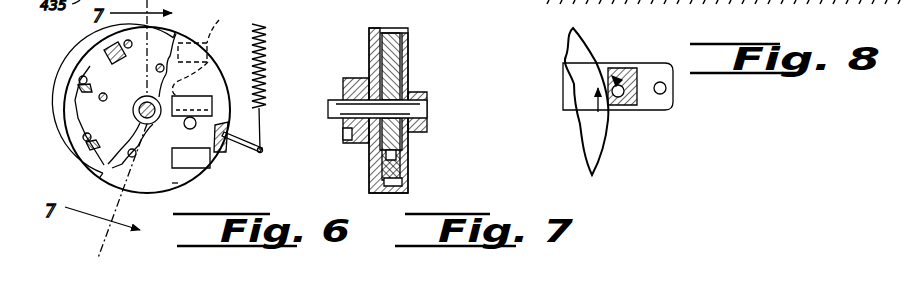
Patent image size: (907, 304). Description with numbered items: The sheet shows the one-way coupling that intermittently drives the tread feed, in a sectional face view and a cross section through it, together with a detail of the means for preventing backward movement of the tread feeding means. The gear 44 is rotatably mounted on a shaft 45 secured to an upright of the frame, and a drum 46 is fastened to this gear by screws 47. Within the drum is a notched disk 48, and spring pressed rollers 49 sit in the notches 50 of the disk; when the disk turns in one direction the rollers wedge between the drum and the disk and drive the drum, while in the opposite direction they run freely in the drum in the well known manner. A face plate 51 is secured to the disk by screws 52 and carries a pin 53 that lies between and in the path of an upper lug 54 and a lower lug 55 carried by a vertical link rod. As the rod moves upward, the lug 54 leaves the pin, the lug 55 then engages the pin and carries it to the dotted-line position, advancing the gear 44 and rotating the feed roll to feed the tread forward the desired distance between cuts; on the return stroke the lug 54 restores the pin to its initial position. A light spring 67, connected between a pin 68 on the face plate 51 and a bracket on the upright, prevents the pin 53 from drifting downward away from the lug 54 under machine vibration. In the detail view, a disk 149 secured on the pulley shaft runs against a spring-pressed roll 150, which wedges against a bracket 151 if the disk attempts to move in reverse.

In FIG. 7, the gear 44 is at (358, 78).
In FIG. 6, the shaft 45 is at (135, 114).
In FIG. 7, the shaft 45 is at (425, 108).
In FIG. 6, the drum 46 is at (66, 100).
In FIG. 7, the drum 46 is at (388, 30).
In FIG. 7, the screws 47 is at (345, 134).
In FIG. 6, the notched disk 48 is at (95, 70).
In FIG. 7, the notched disk 48 is at (400, 60).
In FIG. 6, the spring pressed rollers 49 is at (122, 40).
In FIG. 6, the notches 50 is at (75, 126).
In FIG. 6, the face plate 51 is at (172, 182).
In FIG. 7, the face plate 51 is at (404, 170).
In FIG. 7, the screws 52 is at (398, 156).
In FIG. 6, the pin 53 is at (208, 82).
In FIG. 6, the upper lug 54 is at (212, 100).
In FIG. 6, the lower lug 55 is at (224, 160).
In FIG. 6, the light spring 67 is at (276, 26).
In FIG. 6, the pin 68 is at (262, 155).
In FIG. 8, the disk 149 is at (598, 150).
In FIG. 8, the spring-pressed roll 150 is at (620, 98).
In FIG. 8, the bracket 151 is at (626, 70).